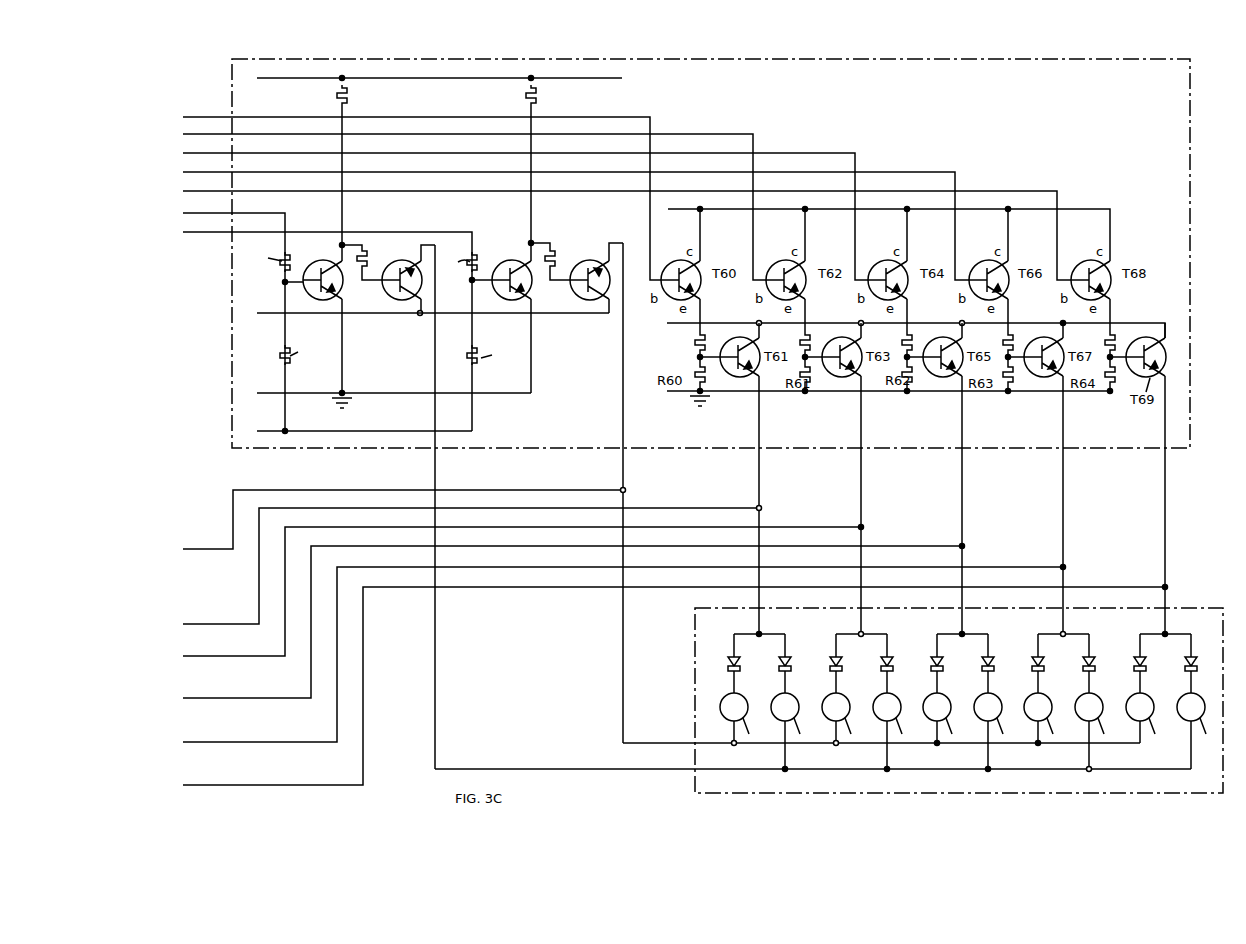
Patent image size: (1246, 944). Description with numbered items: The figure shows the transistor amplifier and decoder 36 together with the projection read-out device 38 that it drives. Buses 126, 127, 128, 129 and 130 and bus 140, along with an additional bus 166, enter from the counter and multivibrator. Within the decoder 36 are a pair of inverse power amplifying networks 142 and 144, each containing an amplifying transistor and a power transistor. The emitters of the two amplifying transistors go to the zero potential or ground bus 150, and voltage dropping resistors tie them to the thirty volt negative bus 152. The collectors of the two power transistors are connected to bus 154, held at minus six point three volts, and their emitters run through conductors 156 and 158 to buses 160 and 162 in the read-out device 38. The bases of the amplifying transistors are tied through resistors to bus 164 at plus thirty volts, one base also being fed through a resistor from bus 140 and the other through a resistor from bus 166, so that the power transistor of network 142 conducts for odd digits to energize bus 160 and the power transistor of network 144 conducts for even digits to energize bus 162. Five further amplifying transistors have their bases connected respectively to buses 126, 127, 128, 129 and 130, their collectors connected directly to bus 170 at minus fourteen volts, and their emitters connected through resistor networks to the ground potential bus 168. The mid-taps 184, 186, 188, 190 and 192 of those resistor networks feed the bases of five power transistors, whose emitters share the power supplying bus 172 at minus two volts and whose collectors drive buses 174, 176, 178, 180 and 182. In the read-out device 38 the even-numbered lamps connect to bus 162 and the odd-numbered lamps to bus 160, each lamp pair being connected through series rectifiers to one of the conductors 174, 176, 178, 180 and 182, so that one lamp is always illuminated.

The transistor amplifier and decoder 36 is at (232, 333).
The projection read-out device 38 is at (695, 636).
The bus 126 is at (186, 120).
The bus 127 is at (186, 138).
The bus 128 is at (186, 156).
The bus 129 is at (186, 175).
The bus 130 is at (186, 194).
The bus 140 is at (186, 235).
The inverse power amplifying network 142 is at (383, 222).
The inverse power amplifying network 144 is at (592, 222).
The zero potential or ground bus 150 is at (412, 393).
The 30 volt negative bus 152 is at (607, 79).
The bus 154 is at (404, 314).
The conductor 156 is at (435, 345).
The conductor 158 is at (190, 552).
The bus 160 is at (1016, 769).
The bus 162 is at (914, 743).
The bus 164 is at (407, 431).
The bus 166 is at (186, 216).
The ground potential bus 168 is at (885, 392).
The bus 170 is at (1073, 209).
The power supplying bus 172 is at (849, 323).
The bus 174 is at (205, 625).
The bus 176 is at (210, 657).
The bus 178 is at (220, 699).
The bus 180 is at (233, 744).
The bus 182 is at (243, 787).
The mid-tap 184 is at (697, 345).
The mid-tap 186 is at (808, 358).
The mid-tap 188 is at (910, 358).
The mid-tap 190 is at (1011, 358).
The mid-tap 192 is at (1113, 358).